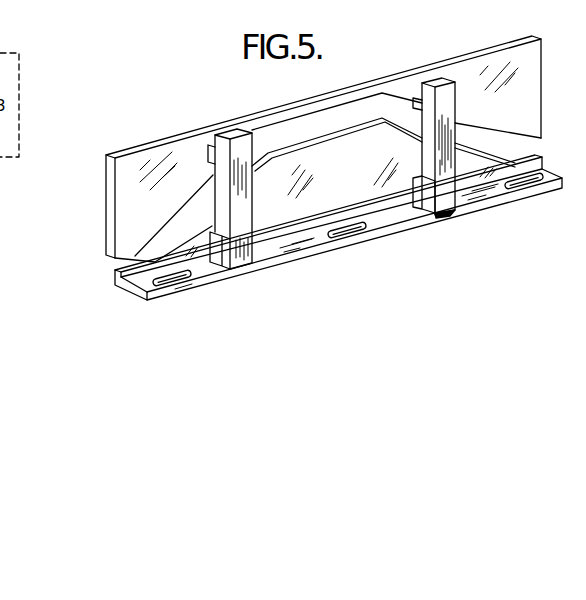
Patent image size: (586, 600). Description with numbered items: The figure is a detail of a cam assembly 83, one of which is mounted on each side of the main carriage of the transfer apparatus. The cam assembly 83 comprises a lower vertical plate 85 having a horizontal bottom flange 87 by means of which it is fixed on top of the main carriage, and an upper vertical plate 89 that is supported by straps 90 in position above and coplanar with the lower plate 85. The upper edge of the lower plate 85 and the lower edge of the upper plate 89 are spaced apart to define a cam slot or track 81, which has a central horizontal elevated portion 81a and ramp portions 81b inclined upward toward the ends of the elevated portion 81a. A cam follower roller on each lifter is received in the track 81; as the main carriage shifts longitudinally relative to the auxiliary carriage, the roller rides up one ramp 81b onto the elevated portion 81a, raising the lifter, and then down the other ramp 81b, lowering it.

The cam slot or track 81 is at (337, 137).
The central horizontal elevated portion 81a is at (340, 111).
The ramp portions 81b is at (184, 208).
The cam assembly 83 is at (323, 84).
The lower vertical plate 85 is at (298, 143).
The horizontal bottom flange 87 is at (383, 234).
The upper vertical plate 89 is at (381, 78).
The straps 90 is at (251, 212).